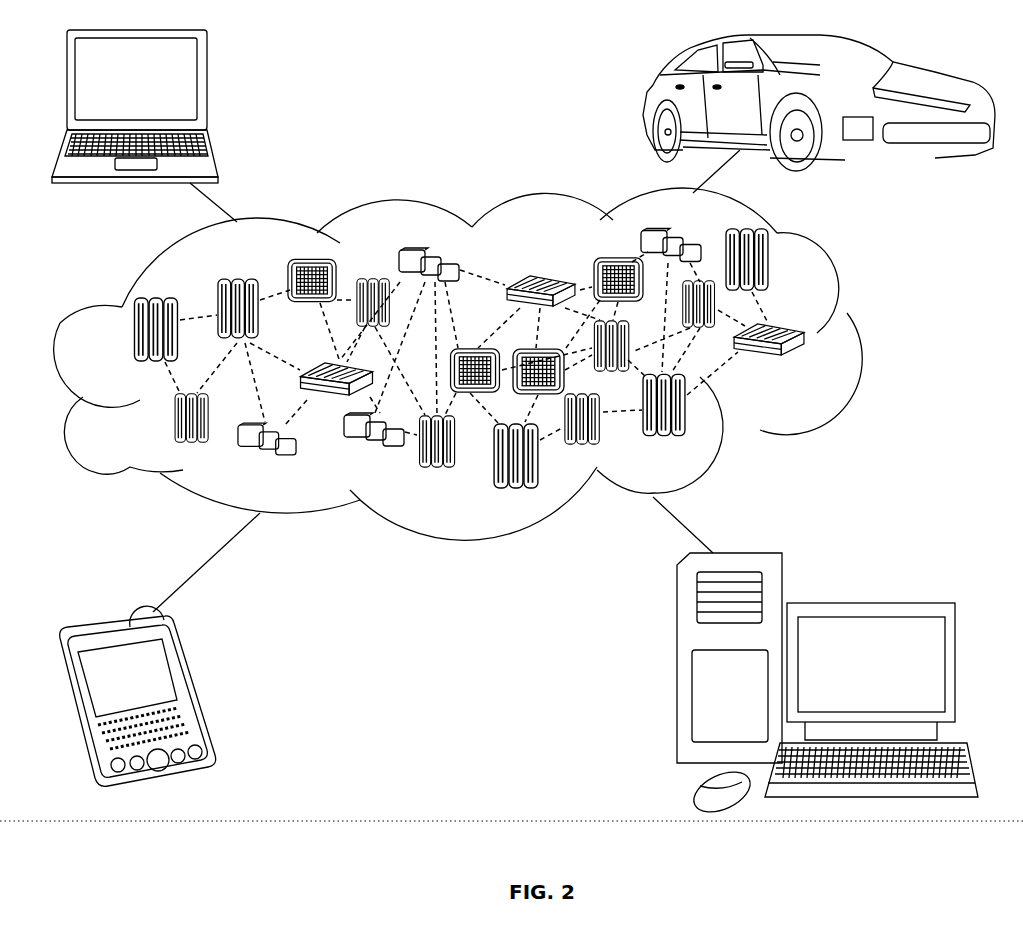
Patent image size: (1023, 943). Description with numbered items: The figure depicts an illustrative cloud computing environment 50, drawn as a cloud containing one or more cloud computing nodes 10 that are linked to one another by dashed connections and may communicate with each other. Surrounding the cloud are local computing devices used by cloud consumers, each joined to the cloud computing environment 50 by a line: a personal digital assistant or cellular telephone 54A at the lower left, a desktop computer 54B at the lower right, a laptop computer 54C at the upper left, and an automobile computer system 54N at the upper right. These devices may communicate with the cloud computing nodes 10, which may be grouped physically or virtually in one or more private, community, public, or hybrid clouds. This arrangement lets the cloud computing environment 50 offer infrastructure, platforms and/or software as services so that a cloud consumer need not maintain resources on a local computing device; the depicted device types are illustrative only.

The cloud computing nodes 10 is at (523, 425).
The cloud computing environment 50 is at (868, 340).
The personal digital assistant (PDA) or cellular telephone 54A is at (197, 688).
The desktop computer 54B is at (868, 603).
The laptop computer 54C is at (210, 88).
The automobile computer system 54N is at (650, 103).